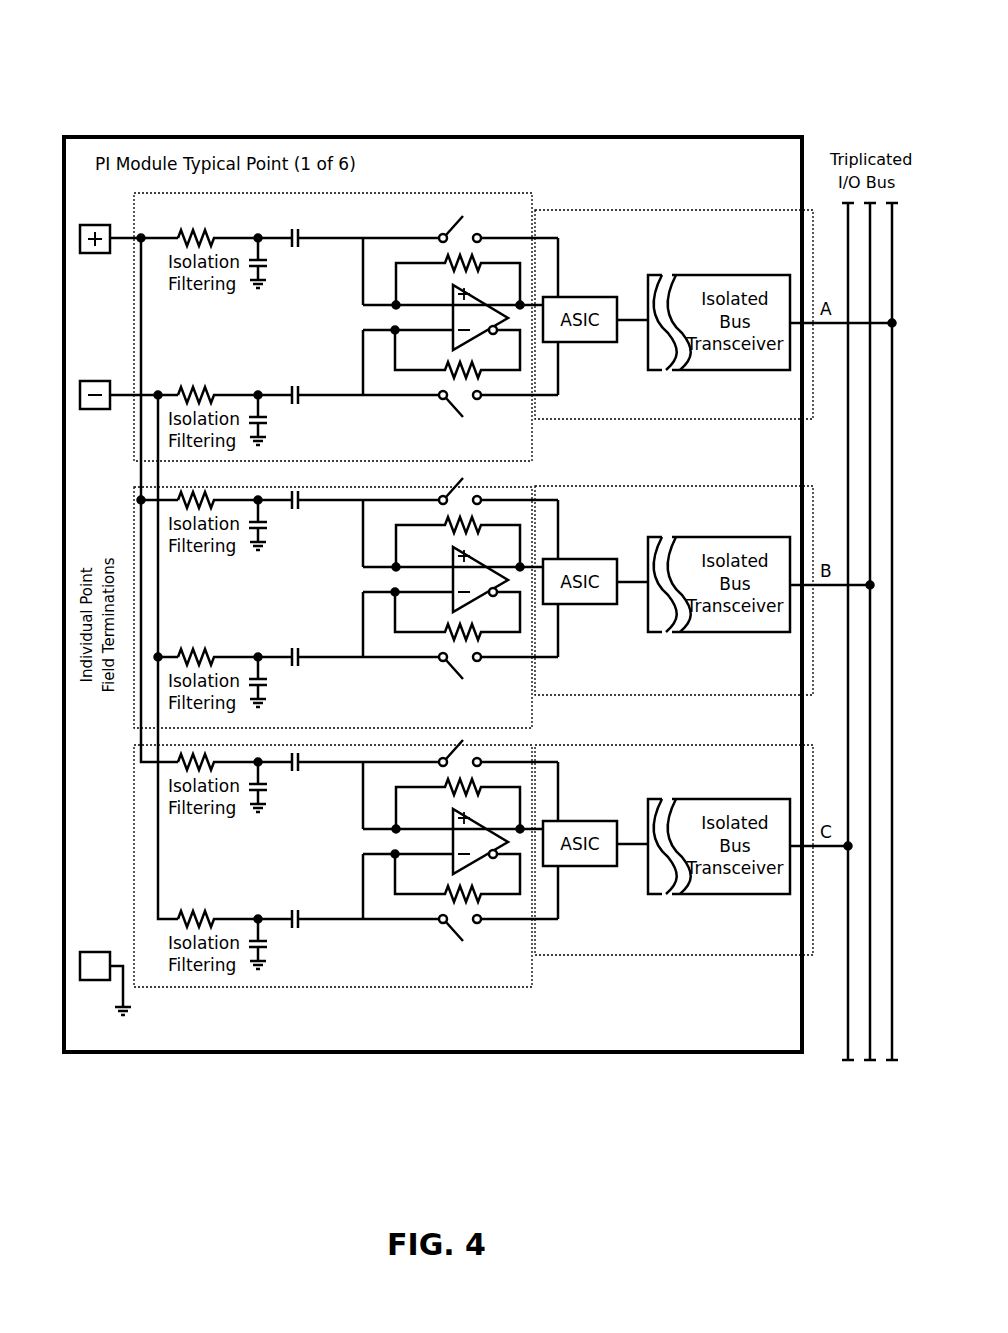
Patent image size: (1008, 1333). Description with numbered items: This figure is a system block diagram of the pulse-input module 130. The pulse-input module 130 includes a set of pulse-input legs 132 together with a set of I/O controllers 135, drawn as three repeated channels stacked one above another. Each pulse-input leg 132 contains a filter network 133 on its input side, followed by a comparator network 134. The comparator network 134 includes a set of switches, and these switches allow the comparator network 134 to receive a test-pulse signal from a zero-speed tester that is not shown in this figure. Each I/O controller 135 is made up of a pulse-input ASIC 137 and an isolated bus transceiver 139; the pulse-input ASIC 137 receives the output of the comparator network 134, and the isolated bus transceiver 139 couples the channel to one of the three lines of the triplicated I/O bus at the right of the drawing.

The pulse-input module 130 is at (475, 45).
The pulse-input leg 132 is at (452, 193).
The filter network 133 is at (232, 221).
The comparator network 134 is at (472, 222).
The I/O controller 135 is at (598, 210).
The pulse-input ASIC 137 is at (580, 286).
The isolated bus transceiver 139 is at (680, 261).